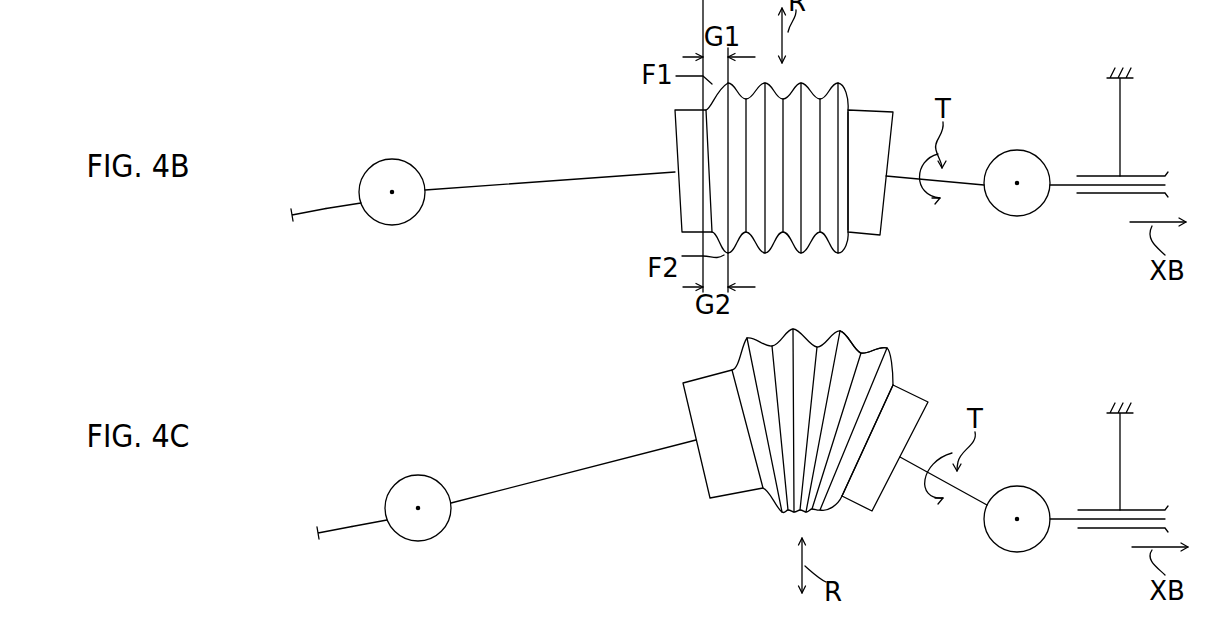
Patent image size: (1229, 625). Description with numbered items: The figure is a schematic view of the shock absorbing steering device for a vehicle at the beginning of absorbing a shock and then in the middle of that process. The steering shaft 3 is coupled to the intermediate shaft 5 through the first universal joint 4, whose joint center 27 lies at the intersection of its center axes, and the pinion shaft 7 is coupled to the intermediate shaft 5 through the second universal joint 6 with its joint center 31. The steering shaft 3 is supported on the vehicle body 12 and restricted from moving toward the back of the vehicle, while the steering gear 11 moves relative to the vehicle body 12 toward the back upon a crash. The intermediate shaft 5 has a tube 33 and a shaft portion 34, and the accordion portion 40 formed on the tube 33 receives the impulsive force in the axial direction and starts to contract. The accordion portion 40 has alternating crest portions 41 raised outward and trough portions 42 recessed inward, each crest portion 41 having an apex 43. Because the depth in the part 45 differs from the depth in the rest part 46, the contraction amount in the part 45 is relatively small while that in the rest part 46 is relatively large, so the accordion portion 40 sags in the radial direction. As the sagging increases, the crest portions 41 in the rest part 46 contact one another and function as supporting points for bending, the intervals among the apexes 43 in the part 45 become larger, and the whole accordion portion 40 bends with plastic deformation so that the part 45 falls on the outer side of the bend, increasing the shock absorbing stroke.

In FIG. 4B, the steering shaft 3 is at (1138, 176).
In FIG. 4C, the steering shaft 3 is at (1138, 509).
In FIG. 4B, the first universal joint 4 is at (1022, 148).
In FIG. 4C, the first universal joint 4 is at (1022, 484).
In FIG. 4B, the intermediate shaft 5 is at (748, 143).
In FIG. 4C, the intermediate shaft 5 is at (781, 420).
In FIG. 4B, the second universal joint 6 is at (400, 156).
In FIG. 4C, the second universal joint 6 is at (424, 473).
In FIG. 4B, the pinion shaft 7 is at (339, 204).
In FIG. 4C, the pinion shaft 7 is at (365, 520).
In FIG. 4B, the steering gear 11 is at (311, 210).
In FIG. 4C, the steering gear 11 is at (336, 527).
In FIG. 4B, the vehicle body 12 is at (1128, 79).
In FIG. 4C, the vehicle body 12 is at (1128, 414).
In FIG. 4B, the joint center 27 is at (1017, 186).
In FIG. 4C, the joint center 27 is at (1017, 521).
In FIG. 4B, the joint center 31 is at (392, 194).
In FIG. 4C, the joint center 31 is at (418, 510).
In FIG. 4B, the tube 33 is at (643, 249).
In FIG. 4C, the tube 33 is at (724, 495).
In FIG. 4B, the shaft portion 34 is at (563, 179).
In FIG. 4C, the shaft portion 34 is at (588, 466).
In FIG. 4B, the accordion portion 40 is at (764, 80).
In FIG. 4C, the accordion portion 40 is at (786, 330).
In FIG. 4B, the crest portions 41 is at (801, 80).
In FIG. 4C, the crest portions 41 is at (745, 339).
In FIG. 4B, the trough portions 42 is at (819, 97).
In FIG. 4C, the trough portions 42 is at (859, 352).
In FIG. 4C, the apex 43 is at (790, 329).
In FIG. 4B, the part of the accordion portion 45 is at (872, 123).
In FIG. 4C, the part of the accordion portion 45 is at (910, 400).
In FIG. 4B, the rest part of the accordion portion 46 is at (870, 143).
In FIG. 4C, the rest part of the accordion portion 46 is at (860, 500).